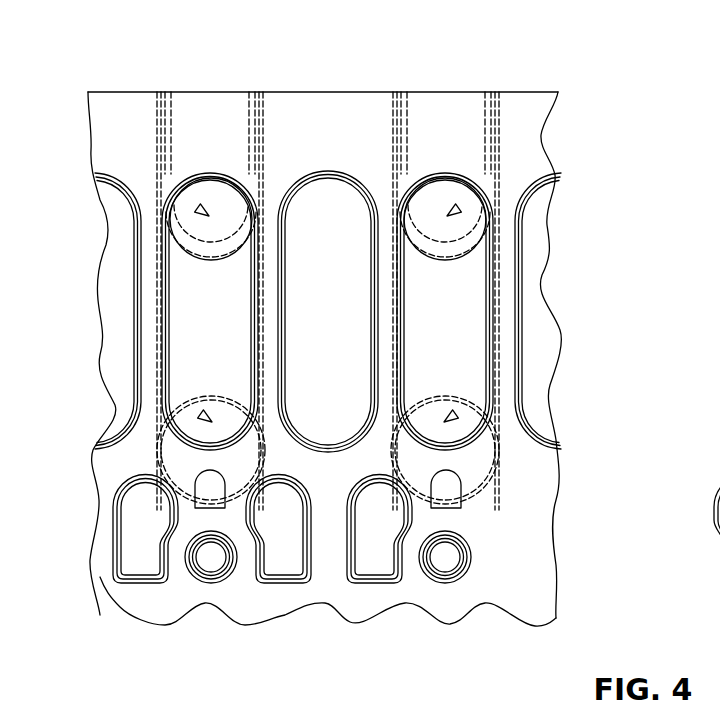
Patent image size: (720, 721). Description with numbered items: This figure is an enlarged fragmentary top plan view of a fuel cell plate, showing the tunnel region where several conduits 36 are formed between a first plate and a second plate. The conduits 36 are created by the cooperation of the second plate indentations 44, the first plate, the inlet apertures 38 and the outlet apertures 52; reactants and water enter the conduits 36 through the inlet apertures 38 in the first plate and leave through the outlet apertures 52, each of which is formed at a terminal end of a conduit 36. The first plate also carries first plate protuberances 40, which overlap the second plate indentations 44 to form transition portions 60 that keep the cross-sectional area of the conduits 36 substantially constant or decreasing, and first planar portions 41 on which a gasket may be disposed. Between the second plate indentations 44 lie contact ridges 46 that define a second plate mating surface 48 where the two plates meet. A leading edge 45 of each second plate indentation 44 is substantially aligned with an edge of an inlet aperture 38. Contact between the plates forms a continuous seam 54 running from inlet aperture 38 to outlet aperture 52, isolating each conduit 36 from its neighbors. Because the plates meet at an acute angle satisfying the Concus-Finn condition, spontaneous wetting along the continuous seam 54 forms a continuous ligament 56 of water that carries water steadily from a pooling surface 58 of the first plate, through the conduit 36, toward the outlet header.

The conduit 36 is at (205, 292).
The inlet aperture 38 is at (198, 482).
The first plate protuberance 40 is at (199, 351).
The first planar portion 41 is at (207, 142).
The second plate indentation 44 is at (226, 110).
The leading edge 45 is at (215, 493).
The contact ridge 46 is at (124, 122).
The second plate mating surface 48 is at (145, 334).
The outlet aperture 52 is at (223, 112).
The continuous seam 54 is at (148, 108).
The continuous ligament 56 is at (197, 208).
The pooling surface 58 is at (316, 486).
The transition portion 60 is at (459, 208).